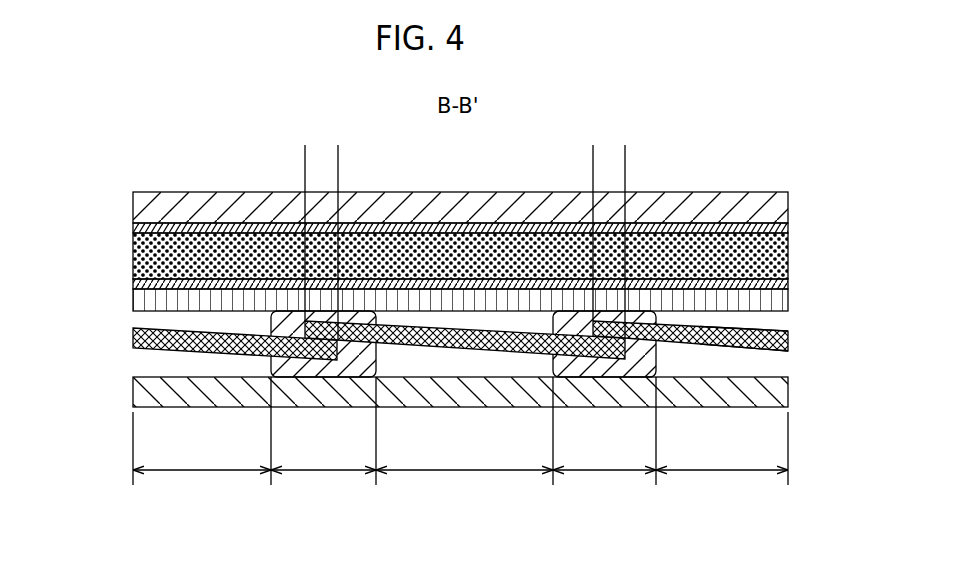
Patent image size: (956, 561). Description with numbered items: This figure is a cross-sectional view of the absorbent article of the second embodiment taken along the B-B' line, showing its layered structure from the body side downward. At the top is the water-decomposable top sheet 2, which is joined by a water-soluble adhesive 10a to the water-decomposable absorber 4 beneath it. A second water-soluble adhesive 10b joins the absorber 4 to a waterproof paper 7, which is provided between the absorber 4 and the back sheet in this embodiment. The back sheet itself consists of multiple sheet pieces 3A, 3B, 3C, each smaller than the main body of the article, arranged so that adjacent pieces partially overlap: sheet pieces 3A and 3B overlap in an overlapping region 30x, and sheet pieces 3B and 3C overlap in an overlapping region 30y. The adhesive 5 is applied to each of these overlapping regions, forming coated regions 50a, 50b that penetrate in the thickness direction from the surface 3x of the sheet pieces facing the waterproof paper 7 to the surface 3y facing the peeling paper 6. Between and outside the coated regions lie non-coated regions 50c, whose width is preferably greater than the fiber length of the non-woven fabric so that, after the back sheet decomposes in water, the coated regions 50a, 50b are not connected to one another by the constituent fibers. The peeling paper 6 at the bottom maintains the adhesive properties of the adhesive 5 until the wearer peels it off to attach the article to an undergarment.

The top sheet 2 is at (778, 205).
The absorber 4 is at (783, 255).
The waterproof paper 7 is at (775, 297).
The water-soluble adhesive 10a is at (133, 225).
The water-soluble adhesive 10b is at (133, 285).
The surface of the back sheet 3x is at (765, 328).
The surface of the back sheet 3y is at (765, 350).
The sheet piece 3A is at (720, 351).
The sheet piece 3B is at (490, 350).
The sheet piece 3C is at (195, 356).
The adhesive 5 is at (620, 370).
The peeling paper 6 is at (778, 390).
The overlapping region 30x is at (283, 157).
The overlapping region 30y is at (647, 157).
The coated region 50a is at (322, 472).
The coated region 50b is at (602, 472).
The non-coated region 50c is at (718, 472).